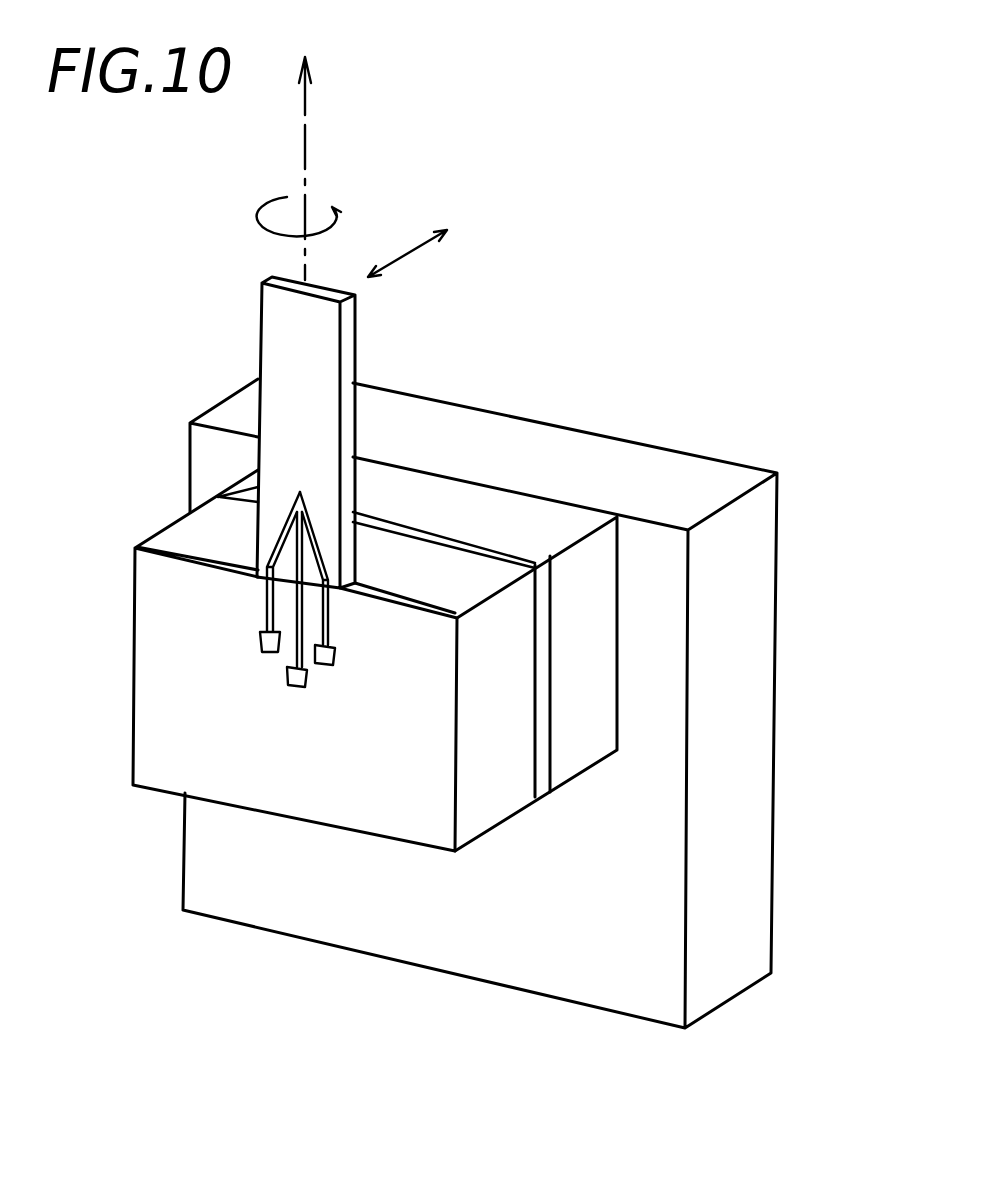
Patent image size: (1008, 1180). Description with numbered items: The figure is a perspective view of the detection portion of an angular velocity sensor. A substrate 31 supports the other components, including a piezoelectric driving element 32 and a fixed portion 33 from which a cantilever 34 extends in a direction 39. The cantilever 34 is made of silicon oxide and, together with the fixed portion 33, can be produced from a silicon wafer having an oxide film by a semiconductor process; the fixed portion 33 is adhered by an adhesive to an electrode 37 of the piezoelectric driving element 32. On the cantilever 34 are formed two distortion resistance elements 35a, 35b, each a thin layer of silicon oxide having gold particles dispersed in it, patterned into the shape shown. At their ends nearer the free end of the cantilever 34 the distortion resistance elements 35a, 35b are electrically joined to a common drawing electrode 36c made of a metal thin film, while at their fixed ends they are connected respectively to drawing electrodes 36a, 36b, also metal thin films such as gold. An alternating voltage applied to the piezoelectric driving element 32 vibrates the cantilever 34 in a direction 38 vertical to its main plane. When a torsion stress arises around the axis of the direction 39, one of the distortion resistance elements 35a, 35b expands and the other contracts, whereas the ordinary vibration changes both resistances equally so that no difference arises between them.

The substrate 31 is at (627, 452).
The piezoelectric driving element 32 is at (540, 522).
The fixed portion 33 is at (493, 587).
The cantilever 34 is at (322, 372).
The distortion resistance element 35a is at (312, 543).
The distortion resistance element 35b is at (400, 527).
The drawing electrode 36a is at (263, 637).
The drawing electrode 36b is at (325, 666).
The drawing electrode 36c is at (290, 686).
The electrode 37 is at (545, 702).
The direction 38 is at (430, 228).
The direction 39 is at (299, 142).